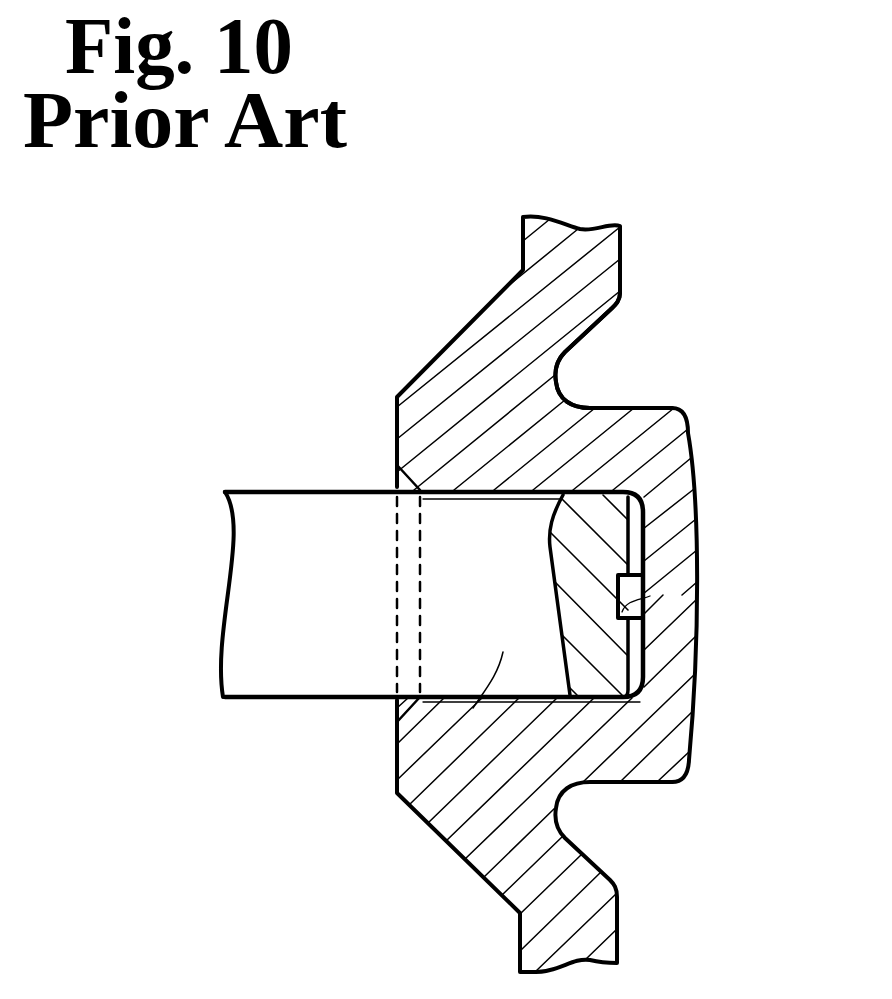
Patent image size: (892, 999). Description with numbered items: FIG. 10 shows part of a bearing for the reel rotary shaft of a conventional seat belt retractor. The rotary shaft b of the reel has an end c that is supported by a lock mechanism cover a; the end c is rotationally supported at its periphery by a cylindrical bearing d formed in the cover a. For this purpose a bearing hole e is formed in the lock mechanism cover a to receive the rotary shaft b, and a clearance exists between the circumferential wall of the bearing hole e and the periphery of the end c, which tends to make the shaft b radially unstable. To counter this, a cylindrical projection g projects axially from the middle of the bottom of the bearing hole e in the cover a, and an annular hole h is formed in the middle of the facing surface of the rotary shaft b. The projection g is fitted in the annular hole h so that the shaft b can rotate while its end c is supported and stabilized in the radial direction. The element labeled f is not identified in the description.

The lock mechanism cover a is at (500, 247).
The rotary shaft b is at (279, 466).
The end of rotary shaft c is at (473, 708).
The cylindrical bearing d is at (713, 437).
The bearing hole e is at (614, 407).
The seal ring f is at (635, 501).
The cylindrical projection g is at (628, 580).
The annular hole h is at (626, 611).